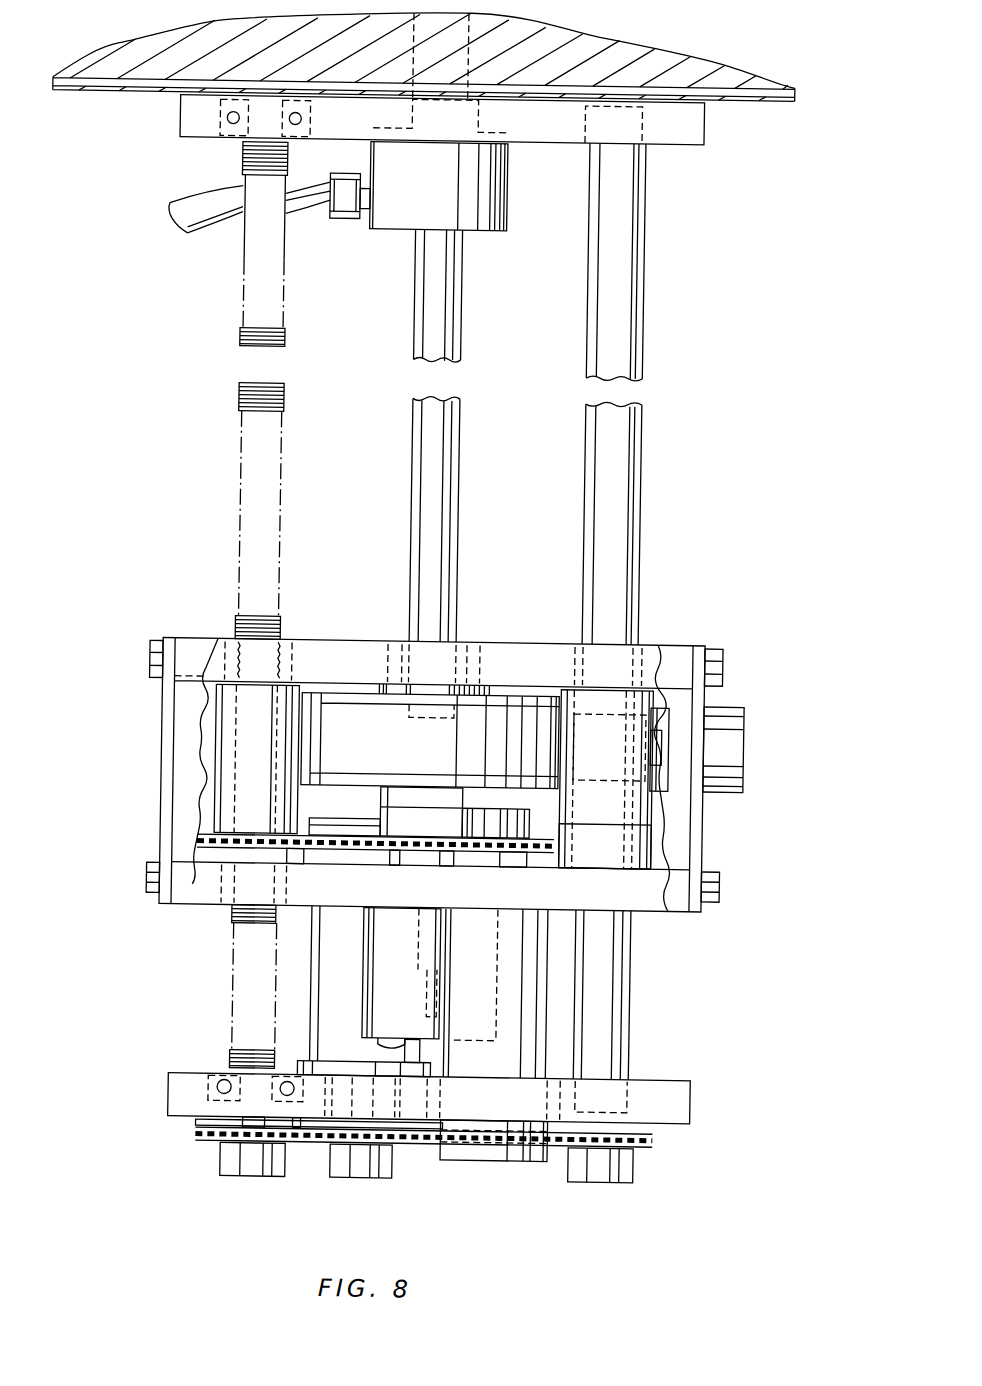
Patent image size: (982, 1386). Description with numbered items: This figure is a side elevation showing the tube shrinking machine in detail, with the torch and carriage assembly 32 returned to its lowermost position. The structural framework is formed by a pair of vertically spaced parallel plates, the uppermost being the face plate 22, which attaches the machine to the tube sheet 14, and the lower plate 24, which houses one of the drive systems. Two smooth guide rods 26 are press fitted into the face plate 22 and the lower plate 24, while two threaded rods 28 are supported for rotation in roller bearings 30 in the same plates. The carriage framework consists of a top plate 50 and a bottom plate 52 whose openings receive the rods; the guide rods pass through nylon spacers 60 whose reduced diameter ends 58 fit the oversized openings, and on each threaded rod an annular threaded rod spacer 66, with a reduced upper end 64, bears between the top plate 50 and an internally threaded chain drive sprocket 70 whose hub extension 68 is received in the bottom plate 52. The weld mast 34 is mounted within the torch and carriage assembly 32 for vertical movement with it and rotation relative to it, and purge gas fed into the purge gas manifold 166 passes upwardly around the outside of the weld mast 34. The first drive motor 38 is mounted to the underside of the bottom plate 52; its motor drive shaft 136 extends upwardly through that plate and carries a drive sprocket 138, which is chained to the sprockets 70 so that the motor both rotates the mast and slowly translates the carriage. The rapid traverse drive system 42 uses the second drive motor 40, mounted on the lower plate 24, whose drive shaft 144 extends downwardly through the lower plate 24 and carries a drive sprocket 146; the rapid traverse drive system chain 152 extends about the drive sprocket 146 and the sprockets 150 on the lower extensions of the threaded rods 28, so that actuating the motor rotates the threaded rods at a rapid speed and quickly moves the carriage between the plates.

The tube sheet 14 is at (98, 97).
The face plate 22 is at (169, 115).
The roller bearings 30 is at (213, 140).
The purge gas manifold 166 is at (500, 207).
The guide rods 26 is at (636, 327).
The threaded rods 28 is at (232, 401).
The weld mast 34 is at (379, 446).
The top plate 50 is at (193, 641).
The upper end 64 is at (286, 643).
The reduced diameter ends 58 is at (631, 641).
The drive shaft 144 is at (734, 698).
The threaded rod spacers 66 is at (213, 716).
The torch and carriage assembly 32 is at (403, 771).
The chain drive sprocket 70 is at (200, 849).
The drive sprocket 138 is at (538, 833).
The spacers 60 is at (654, 841).
The bottom plate 52 is at (185, 908).
The extension 68 is at (226, 914).
The motor drive shaft 136 is at (527, 900).
The second drive motor 40 is at (315, 985).
The lower plate 24 is at (174, 1097).
The sprocket 150 is at (228, 1157).
The drive sprocket 146 is at (338, 1168).
The rapid traverse drive system 42 is at (419, 1182).
The rapid traverse drive system chain 152 is at (430, 1150).
The first drive motor 38 is at (513, 1166).